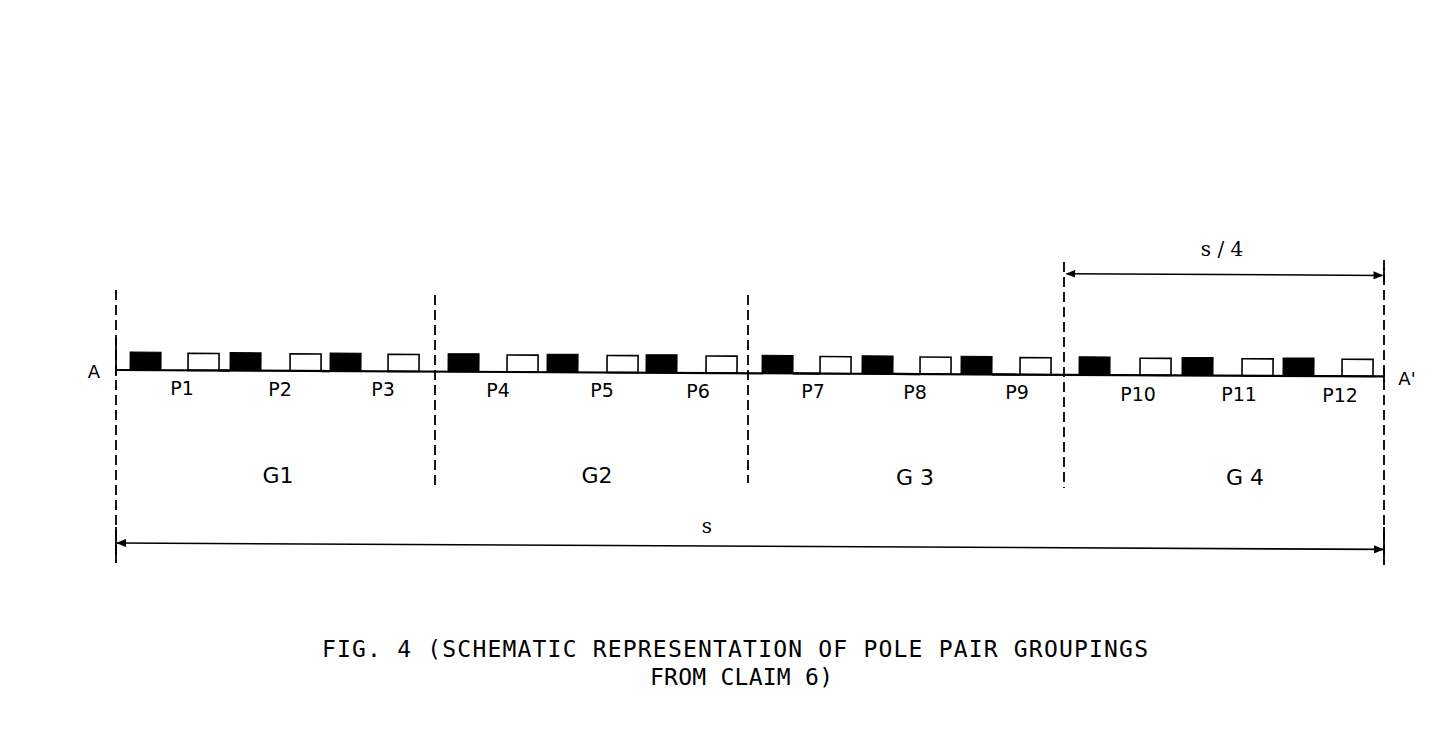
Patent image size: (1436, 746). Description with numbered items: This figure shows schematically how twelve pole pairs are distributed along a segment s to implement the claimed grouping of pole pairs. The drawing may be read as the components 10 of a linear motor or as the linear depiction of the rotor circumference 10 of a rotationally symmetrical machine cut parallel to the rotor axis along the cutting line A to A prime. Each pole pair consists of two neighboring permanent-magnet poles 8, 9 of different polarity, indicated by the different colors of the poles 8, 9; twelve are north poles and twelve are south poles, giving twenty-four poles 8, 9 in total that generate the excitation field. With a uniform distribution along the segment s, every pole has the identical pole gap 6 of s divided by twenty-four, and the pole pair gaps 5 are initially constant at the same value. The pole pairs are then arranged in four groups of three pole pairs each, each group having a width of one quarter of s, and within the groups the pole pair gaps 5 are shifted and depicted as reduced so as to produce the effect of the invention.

The pole pair gaps 5 is at (327, 344).
The pole gap 6 is at (1007, 370).
The pole 8 is at (522, 368).
The pole 9 is at (568, 369).
The components of a linear motor / rotor circumference 10 is at (663, 193).